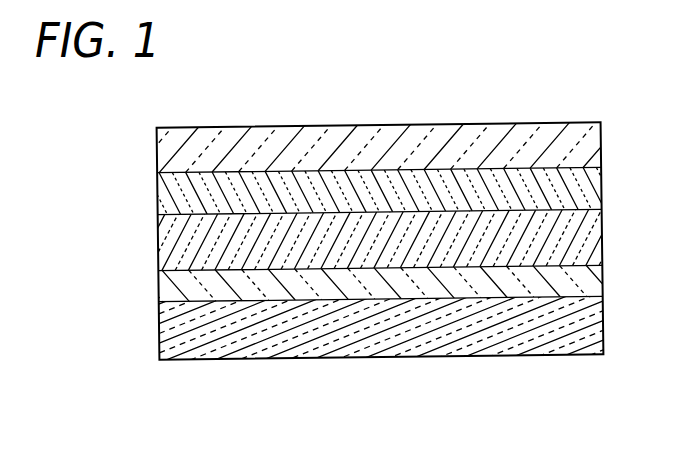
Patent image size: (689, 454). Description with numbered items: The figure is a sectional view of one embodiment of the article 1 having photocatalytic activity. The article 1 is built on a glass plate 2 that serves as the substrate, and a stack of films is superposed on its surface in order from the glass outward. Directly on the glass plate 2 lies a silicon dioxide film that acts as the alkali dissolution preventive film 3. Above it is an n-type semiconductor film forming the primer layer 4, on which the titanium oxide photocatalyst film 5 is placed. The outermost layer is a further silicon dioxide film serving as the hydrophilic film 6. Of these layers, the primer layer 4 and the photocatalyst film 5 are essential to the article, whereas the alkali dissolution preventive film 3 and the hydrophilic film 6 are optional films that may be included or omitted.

The article having photocatalytic activity 1 is at (121, 217).
The glass plate 2 is at (601, 327).
The alkali dissolution preventive film 3 is at (601, 284).
The primer layer 4 is at (601, 243).
The photocatalyst film 5 is at (601, 187).
The hydrophilic film 6 is at (601, 139).